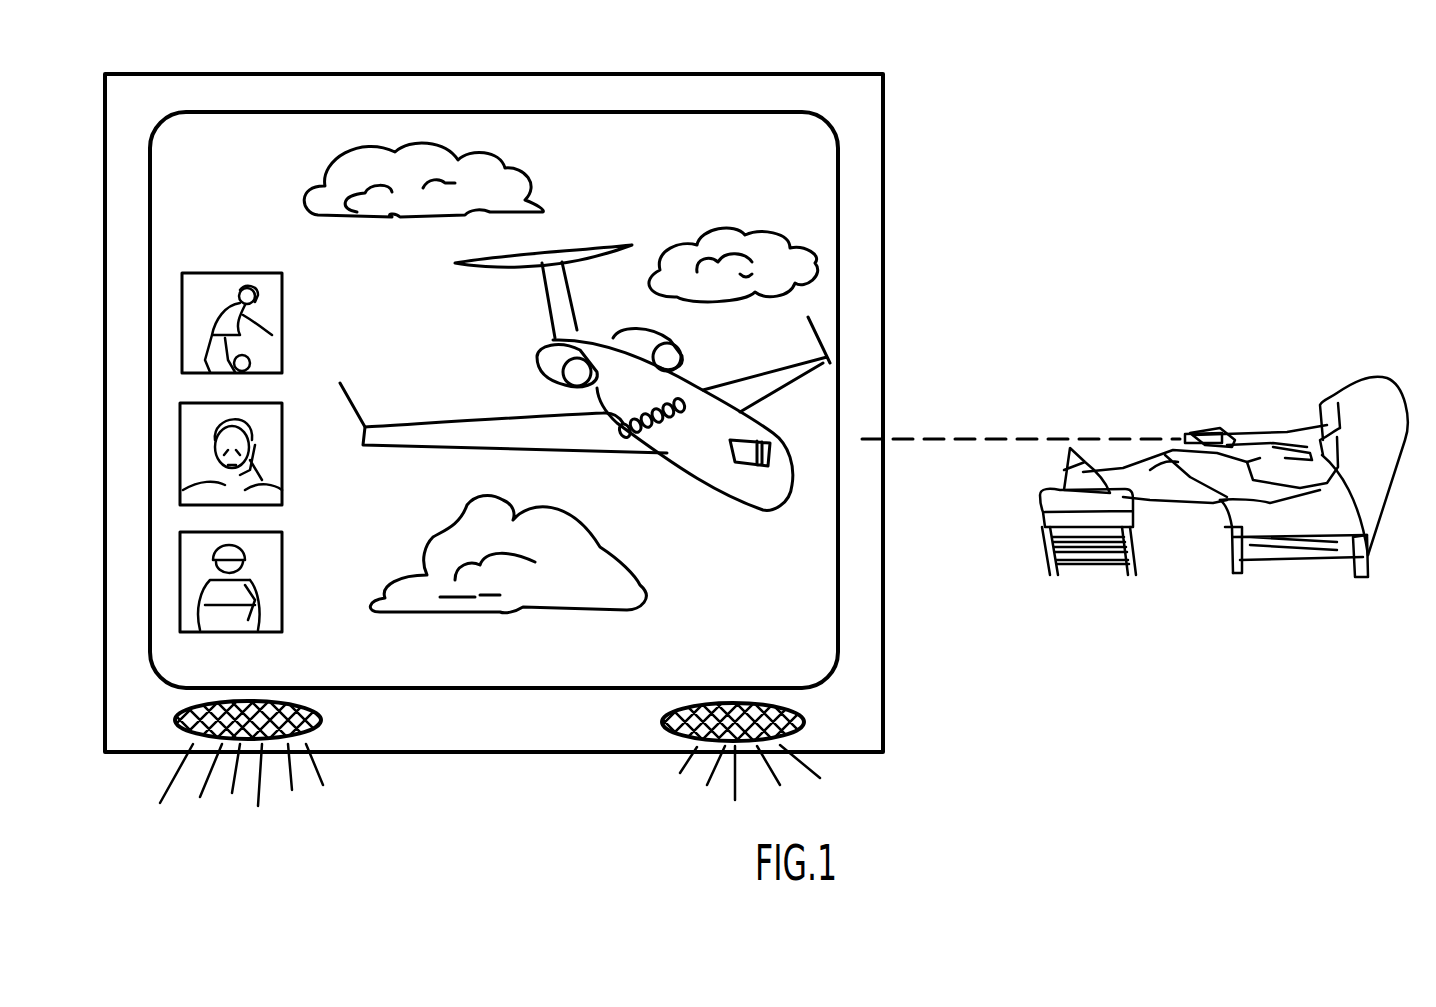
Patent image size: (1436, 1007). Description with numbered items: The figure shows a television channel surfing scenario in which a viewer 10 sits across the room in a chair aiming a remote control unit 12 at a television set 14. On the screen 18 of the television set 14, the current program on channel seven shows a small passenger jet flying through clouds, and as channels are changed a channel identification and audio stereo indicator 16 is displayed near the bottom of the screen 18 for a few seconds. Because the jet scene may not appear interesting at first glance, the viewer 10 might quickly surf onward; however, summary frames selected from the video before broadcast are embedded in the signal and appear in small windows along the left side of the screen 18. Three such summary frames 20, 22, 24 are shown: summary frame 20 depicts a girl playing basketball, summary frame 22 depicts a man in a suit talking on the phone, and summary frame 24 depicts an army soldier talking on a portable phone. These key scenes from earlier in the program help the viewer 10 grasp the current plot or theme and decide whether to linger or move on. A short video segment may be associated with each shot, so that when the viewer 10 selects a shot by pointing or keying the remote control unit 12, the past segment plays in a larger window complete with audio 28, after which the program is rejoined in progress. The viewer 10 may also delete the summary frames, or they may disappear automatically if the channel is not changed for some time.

The viewer 10 is at (1296, 415).
The remote control unit 12 is at (1187, 433).
The television set 14 is at (884, 122).
The channel identification and audio stereo indicator 16 is at (660, 664).
The screen 18 is at (838, 541).
The summary frame 20 is at (282, 325).
The summary frame 22 is at (282, 457).
The summary frame 24 is at (282, 590).
The audio 28 is at (838, 718).